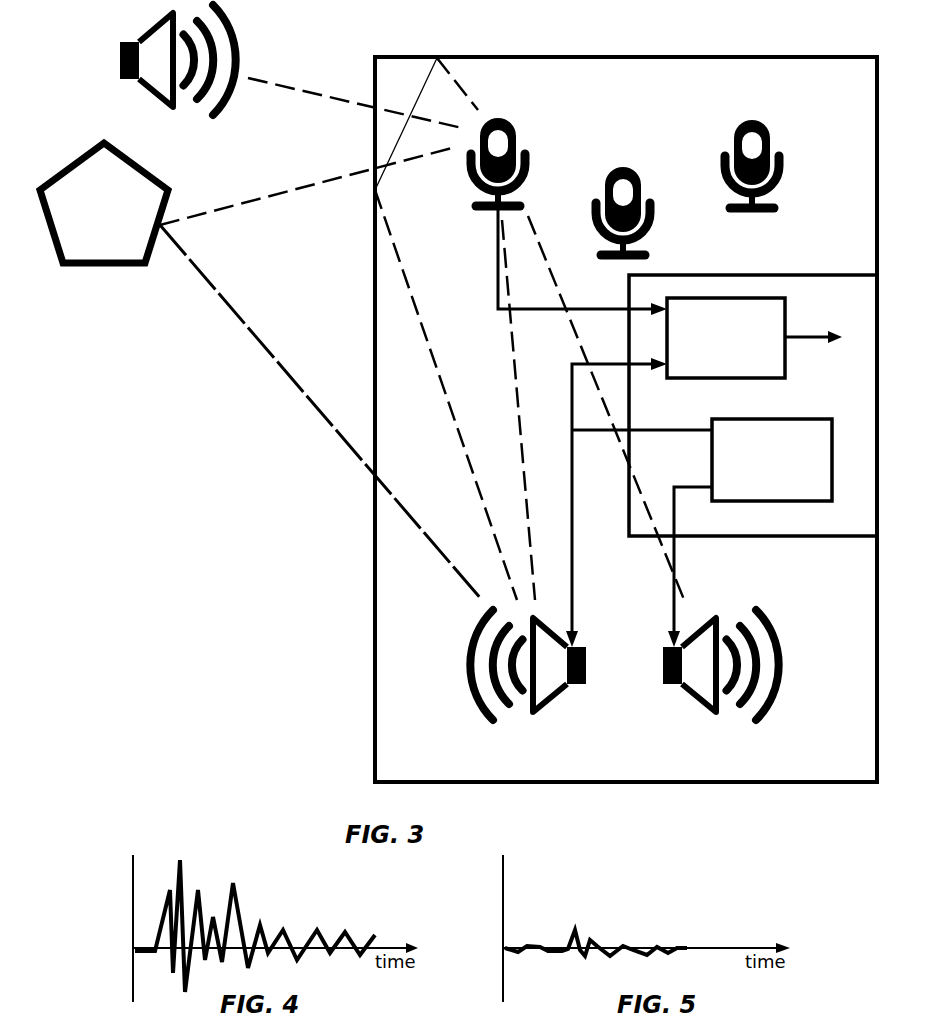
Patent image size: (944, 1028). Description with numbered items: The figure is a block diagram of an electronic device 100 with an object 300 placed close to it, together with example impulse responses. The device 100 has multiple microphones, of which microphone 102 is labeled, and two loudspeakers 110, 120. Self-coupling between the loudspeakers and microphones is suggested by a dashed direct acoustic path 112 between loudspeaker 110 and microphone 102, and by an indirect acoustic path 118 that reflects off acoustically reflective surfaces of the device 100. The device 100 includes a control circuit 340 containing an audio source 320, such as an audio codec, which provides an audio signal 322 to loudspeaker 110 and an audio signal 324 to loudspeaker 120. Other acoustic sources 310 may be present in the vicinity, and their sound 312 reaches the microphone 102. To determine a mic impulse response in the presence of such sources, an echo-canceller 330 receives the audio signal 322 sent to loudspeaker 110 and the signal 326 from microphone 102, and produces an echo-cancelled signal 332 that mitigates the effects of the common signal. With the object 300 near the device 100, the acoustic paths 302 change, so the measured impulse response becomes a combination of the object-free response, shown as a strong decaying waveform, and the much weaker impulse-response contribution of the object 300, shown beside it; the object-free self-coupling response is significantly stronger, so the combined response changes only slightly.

The electronic device 100 is at (375, 350).
The microphone 102 is at (513, 130).
The loudspeaker 110 is at (535, 712).
The direct acoustic path 112 is at (522, 467).
The indirect acoustic path 118 is at (402, 267).
The loudspeaker 120 is at (713, 713).
The object 300 is at (103, 268).
The acoustic paths 302 is at (240, 203).
The other acoustic sources 310 is at (120, 60).
The acoustic path from noise source to microphone 312 is at (297, 88).
The audio source 320 is at (772, 502).
The audio signal 322 is at (570, 462).
The audio signal 324 is at (674, 553).
The microphone signal line 326 is at (612, 306).
The echo-canceller 330 is at (725, 378).
The echo-cancelled signal 332 is at (813, 337).
The control circuit 340 is at (725, 275).